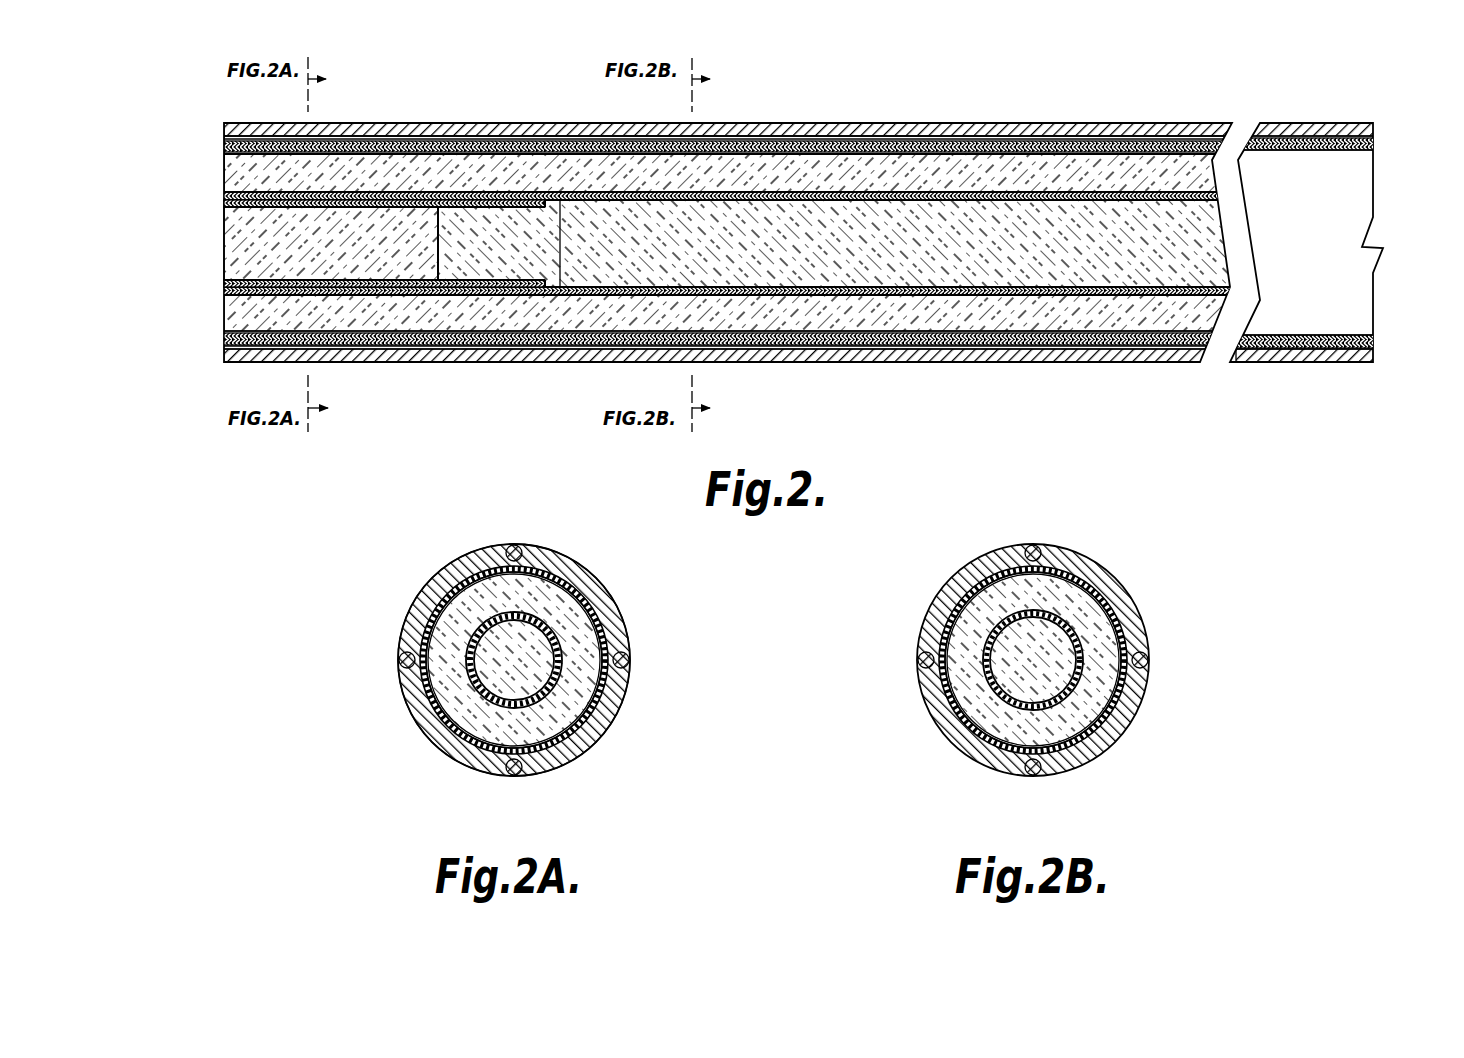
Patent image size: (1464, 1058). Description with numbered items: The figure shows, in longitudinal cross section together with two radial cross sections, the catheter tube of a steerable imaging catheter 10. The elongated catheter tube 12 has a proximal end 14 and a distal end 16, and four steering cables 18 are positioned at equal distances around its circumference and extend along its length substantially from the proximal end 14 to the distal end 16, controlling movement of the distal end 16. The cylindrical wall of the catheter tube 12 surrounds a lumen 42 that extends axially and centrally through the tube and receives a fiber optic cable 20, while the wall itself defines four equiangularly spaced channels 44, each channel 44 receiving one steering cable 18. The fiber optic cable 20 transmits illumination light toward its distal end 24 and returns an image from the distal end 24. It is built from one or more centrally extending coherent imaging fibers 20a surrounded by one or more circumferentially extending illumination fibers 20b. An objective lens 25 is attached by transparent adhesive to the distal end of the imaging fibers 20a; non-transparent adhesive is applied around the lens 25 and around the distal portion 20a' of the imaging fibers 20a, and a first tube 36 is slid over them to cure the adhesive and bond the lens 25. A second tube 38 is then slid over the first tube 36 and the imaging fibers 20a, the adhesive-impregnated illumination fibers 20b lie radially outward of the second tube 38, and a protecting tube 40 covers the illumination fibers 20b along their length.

In FIG. 2, the steerable imaging catheter 10 is at (212, 400).
In FIG. 2, the catheter tube 12 is at (850, 123).
In FIG. 2A, the catheter tube 12 is at (624, 600).
In FIG. 2B, the catheter tube 12 is at (1143, 605).
In FIG. 2, the proximal end 14 is at (1382, 128).
In FIG. 2, the distal end 16 is at (218, 122).
In FIG. 2, the steering cable 18 is at (912, 140).
In FIG. 2A, the steering cable 18 is at (522, 545).
In FIG. 2B, the steering cable 18 is at (1042, 545).
In FIG. 2, the fiber optic cable 20 is at (160, 220).
In FIG. 2, the imaging fiber 20a is at (900, 173).
In FIG. 2B, the imaging fiber 20a is at (1087, 610).
In FIG. 2, the distal portion of the imaging fibers 20a' is at (499, 173).
In FIG. 2, the illumination fiber 20b is at (558, 187).
In FIG. 2A, the illumination fiber 20b is at (575, 648).
In FIG. 2B, the illumination fiber 20b is at (1105, 640).
In FIG. 2, the distal end of the fiber optic cable 24 is at (218, 178).
In FIG. 2, the objective lens 25 is at (248, 258).
In FIG. 2A, the objective lens 25 is at (512, 658).
In FIG. 2, the first tube 36 is at (397, 287).
In FIG. 2A, the first tube 36 is at (442, 570).
In FIG. 2, the second tube 38 is at (353, 190).
In FIG. 2A, the second tube 38 is at (460, 633).
In FIG. 2B, the second tube 38 is at (957, 572).
In FIG. 2, the protecting tube 40 is at (403, 140).
In FIG. 2A, the protecting tube 40 is at (563, 583).
In FIG. 2B, the protecting tube 40 is at (1118, 730).
In FIG. 2, the lumen 42 is at (224, 143).
In FIG. 2A, the lumen 42 is at (607, 720).
In FIG. 2B, the lumen 42 is at (1100, 750).
In FIG. 2A, the channel 44 is at (510, 548).
In FIG. 2B, the channel 44 is at (1030, 548).